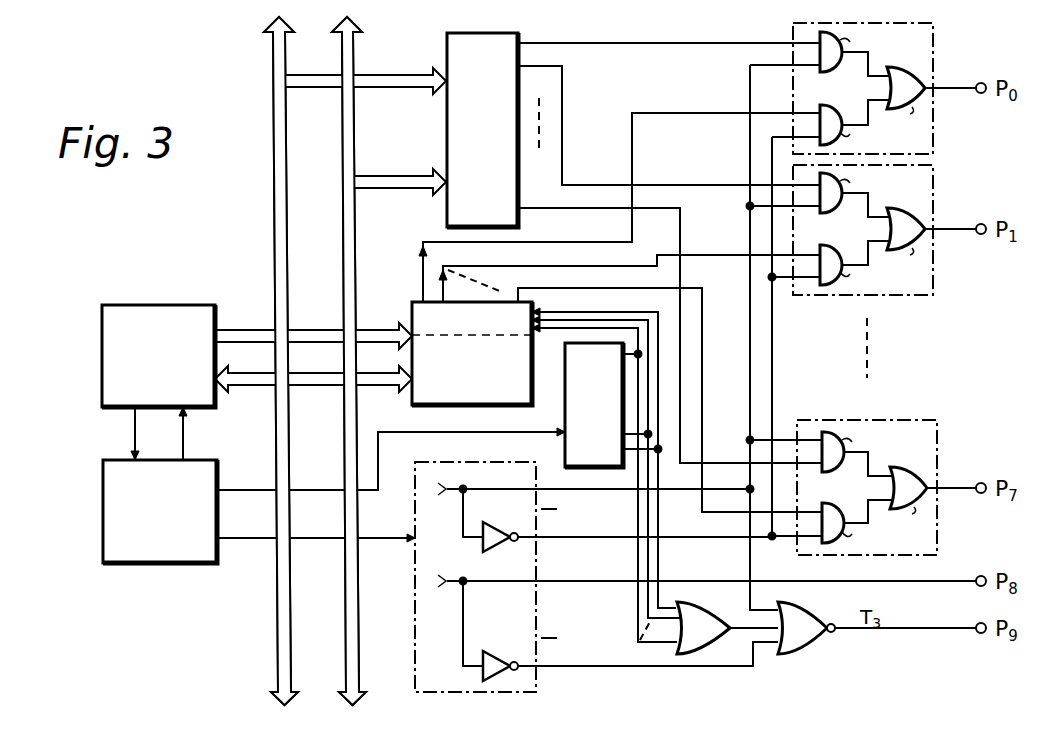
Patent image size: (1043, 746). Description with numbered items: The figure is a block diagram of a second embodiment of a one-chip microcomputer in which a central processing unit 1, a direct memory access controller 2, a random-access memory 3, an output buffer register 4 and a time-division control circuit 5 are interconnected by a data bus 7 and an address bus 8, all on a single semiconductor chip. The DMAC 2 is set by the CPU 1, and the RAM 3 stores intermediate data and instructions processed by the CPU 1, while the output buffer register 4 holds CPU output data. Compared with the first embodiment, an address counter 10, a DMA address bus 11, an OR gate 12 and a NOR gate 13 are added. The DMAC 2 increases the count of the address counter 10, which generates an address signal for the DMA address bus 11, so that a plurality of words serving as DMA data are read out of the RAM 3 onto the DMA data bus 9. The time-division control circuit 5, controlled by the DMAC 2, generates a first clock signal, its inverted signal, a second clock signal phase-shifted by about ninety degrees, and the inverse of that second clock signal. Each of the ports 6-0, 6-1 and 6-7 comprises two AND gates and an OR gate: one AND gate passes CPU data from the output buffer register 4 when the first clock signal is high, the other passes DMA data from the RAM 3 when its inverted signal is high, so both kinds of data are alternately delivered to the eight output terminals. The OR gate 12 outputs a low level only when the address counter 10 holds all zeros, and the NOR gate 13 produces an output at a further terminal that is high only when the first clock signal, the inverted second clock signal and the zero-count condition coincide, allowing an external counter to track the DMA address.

The central processing unit 1 is at (190, 305).
The direct memory access controller 2 is at (210, 460).
The random-access memory 3 is at (532, 380).
The output buffer register 4 is at (510, 34).
The time-division control circuit 5 is at (536, 692).
The I/O port 6-0 is at (933, 33).
The I/O port 6-1 is at (933, 174).
The I/O port 6-7 is at (937, 430).
The data bus 7 is at (273, 45).
The address bus 8 is at (355, 45).
The DMA data bus 9 is at (547, 292).
The address counter 10 is at (565, 448).
The DMA address bus 11 is at (552, 340).
The OR gate 12 is at (722, 616).
The NOR gate 13 is at (815, 613).